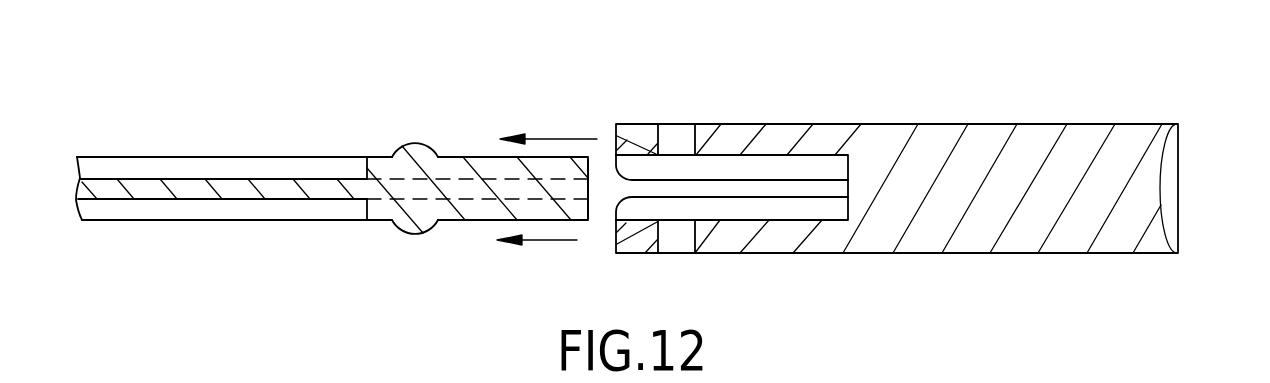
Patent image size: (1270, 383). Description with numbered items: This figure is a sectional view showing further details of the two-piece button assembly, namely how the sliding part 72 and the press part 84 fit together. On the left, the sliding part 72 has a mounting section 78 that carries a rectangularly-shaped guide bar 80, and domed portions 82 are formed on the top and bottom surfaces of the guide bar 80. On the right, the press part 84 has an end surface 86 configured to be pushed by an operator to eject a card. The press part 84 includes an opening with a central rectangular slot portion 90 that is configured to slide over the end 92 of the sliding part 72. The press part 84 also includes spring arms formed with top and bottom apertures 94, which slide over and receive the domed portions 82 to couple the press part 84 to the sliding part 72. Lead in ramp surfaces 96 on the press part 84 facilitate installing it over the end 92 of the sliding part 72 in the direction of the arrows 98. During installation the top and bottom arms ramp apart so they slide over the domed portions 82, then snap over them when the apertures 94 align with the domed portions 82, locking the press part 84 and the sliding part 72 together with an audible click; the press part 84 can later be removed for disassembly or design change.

The sliding part 72 is at (101, 212).
The mounting section 78 is at (279, 160).
The guide bar 80 is at (477, 157).
The domed portions 82 is at (415, 143).
The press part 84 is at (1072, 123).
The end surface 86 is at (1172, 172).
The central rectangular slot portion 90 is at (755, 165).
The end 92 is at (596, 206).
The apertures 94 is at (680, 132).
The lead in ramp surfaces 96 is at (611, 150).
The arrows 98 is at (561, 138).